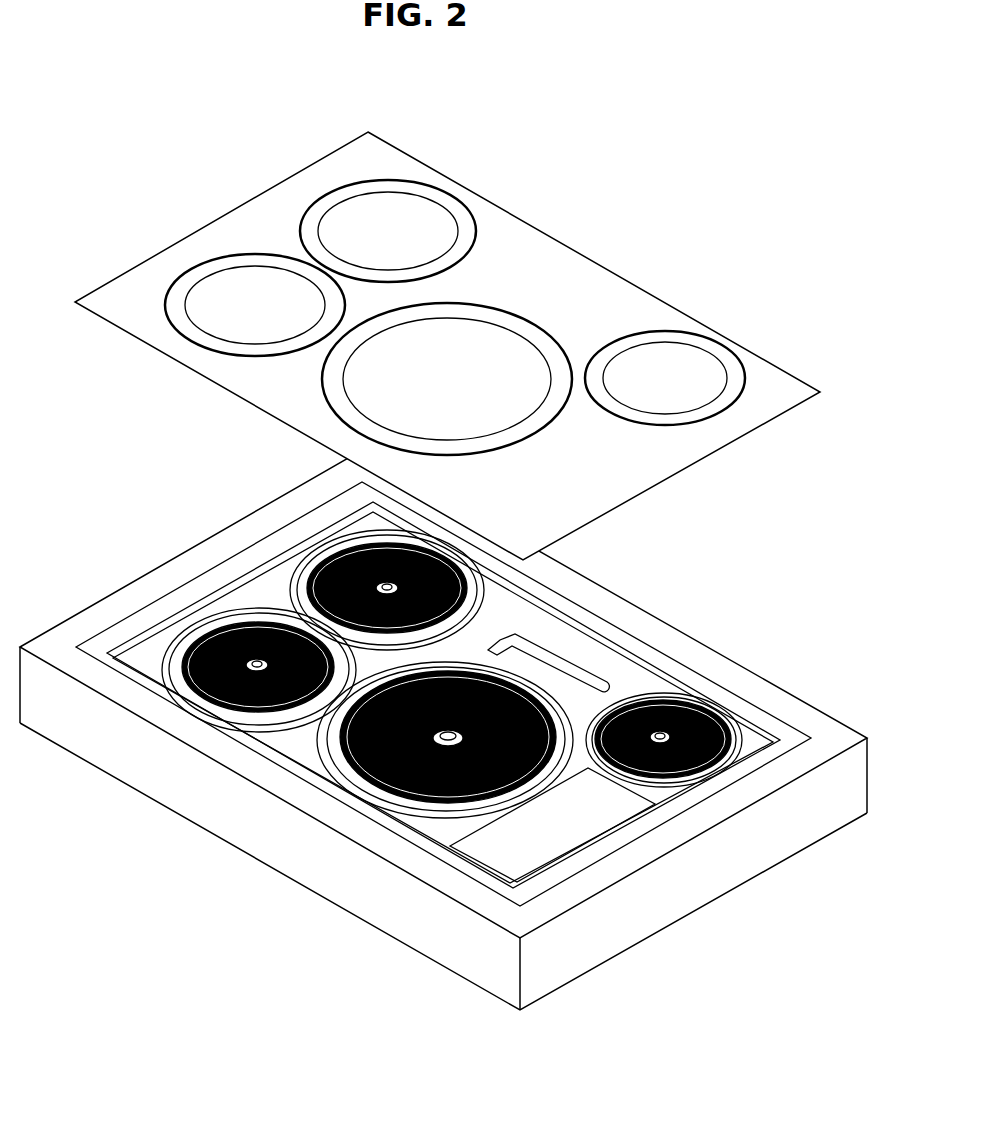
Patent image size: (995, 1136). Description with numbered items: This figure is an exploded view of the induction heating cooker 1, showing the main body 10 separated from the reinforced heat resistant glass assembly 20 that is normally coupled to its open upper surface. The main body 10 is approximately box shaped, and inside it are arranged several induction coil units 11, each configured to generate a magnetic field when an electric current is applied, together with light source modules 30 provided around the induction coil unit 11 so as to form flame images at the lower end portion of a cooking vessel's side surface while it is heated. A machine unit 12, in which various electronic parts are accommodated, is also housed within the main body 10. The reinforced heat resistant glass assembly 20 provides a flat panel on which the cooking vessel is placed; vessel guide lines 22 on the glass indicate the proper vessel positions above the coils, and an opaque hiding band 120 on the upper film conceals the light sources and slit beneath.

The induction heating cooker 1 is at (290, 73).
The main body 10 is at (702, 887).
The induction coil unit 11 is at (385, 792).
The machine unit 12 is at (537, 852).
The reinforced heat resistant glass assembly 20 is at (447, 346).
The vessel guide line 22 is at (497, 327).
The light source module 30 is at (282, 750).
The hiding band 120 is at (555, 343).